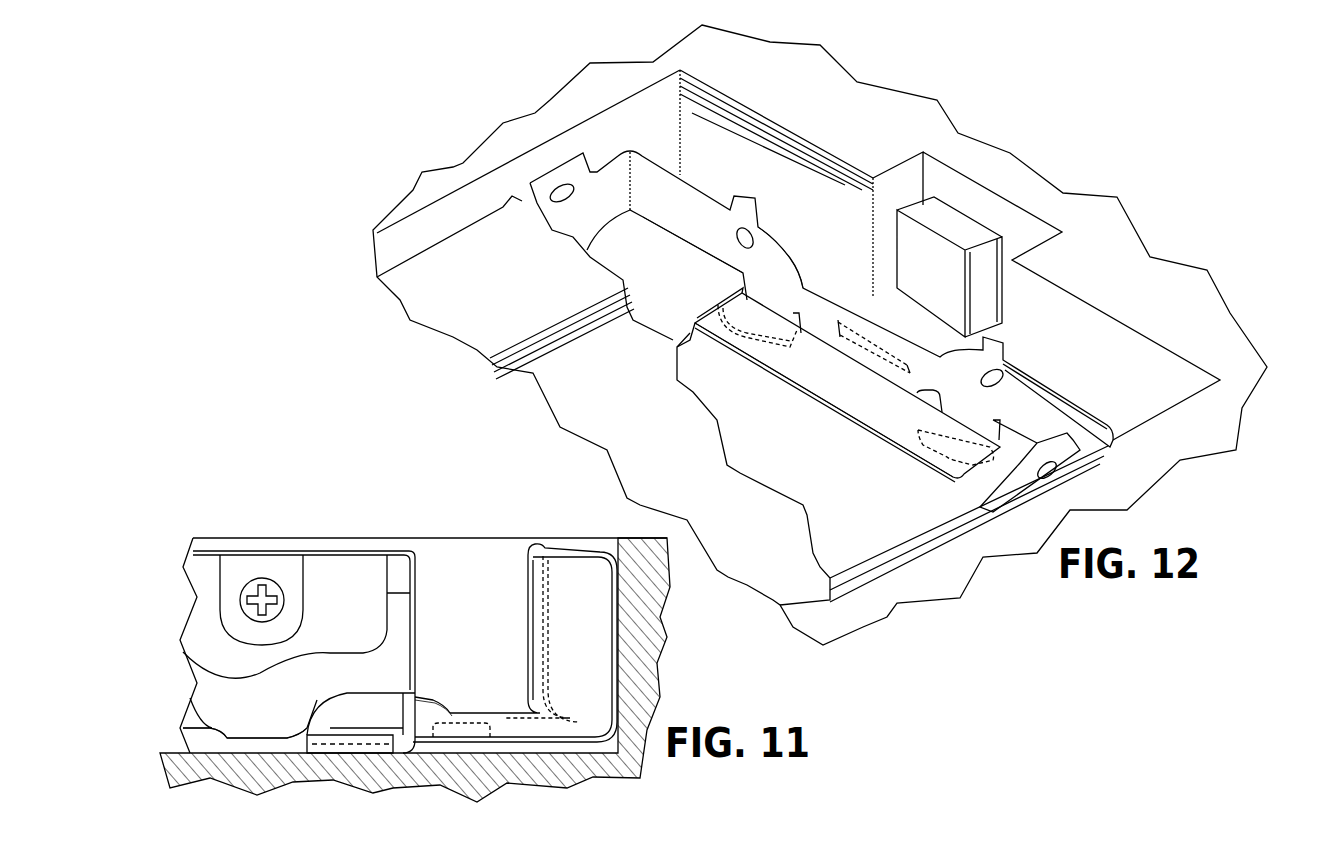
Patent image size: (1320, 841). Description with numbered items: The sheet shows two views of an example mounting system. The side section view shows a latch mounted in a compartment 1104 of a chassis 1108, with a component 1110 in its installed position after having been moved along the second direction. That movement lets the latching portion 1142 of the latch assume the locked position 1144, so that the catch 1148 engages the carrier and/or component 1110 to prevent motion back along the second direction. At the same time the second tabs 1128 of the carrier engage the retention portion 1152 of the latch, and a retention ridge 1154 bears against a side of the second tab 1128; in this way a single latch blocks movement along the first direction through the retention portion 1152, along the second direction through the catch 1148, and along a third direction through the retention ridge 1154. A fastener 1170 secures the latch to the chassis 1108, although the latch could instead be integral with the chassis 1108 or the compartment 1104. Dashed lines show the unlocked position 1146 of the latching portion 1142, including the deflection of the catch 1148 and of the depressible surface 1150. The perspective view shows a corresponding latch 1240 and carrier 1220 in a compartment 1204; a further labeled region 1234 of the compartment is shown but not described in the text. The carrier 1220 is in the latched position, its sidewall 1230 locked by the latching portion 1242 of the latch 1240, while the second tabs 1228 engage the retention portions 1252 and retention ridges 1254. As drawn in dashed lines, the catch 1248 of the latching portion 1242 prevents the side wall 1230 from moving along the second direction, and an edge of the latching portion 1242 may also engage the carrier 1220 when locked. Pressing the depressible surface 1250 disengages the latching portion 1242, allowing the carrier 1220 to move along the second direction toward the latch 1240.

In FIG. 11, the compartment 1104 is at (452, 537).
In FIG. 11, the chassis 1108 is at (165, 752).
In FIG. 11, the component 1110 is at (262, 530).
In FIG. 11, the second tab 1128 is at (332, 716).
In FIG. 11, the latching portion 1142 is at (500, 607).
In FIG. 11, the locked position 1144 is at (526, 706).
In FIG. 11, the unlocked position 1146 is at (572, 704).
In FIG. 11, the catch 1148 is at (435, 700).
In FIG. 11, the depressible surface 1150 is at (578, 552).
In FIG. 11, the retention portion 1152 is at (367, 735).
In FIG. 11, the retention ridge 1154 is at (293, 733).
In FIG. 11, the fastener 1170 is at (470, 727).
In FIG. 12, the compartment 1204 is at (420, 240).
In FIG. 12, the carrier 1220 is at (641, 168).
In FIG. 12, the second tab 1228 is at (720, 303).
In FIG. 12, the sidewall 1230 is at (692, 200).
In FIG. 12, the panel edge 1234 is at (453, 318).
In FIG. 12, the latch 1240 is at (822, 420).
In FIG. 12, the latching portion 1242 is at (863, 285).
In FIG. 12, the catch 1248 is at (838, 296).
In FIG. 12, the depressible surface 1250 is at (923, 210).
In FIG. 12, the retention portion 1252 is at (731, 348).
In FIG. 12, the retention ridge 1254 is at (690, 340).